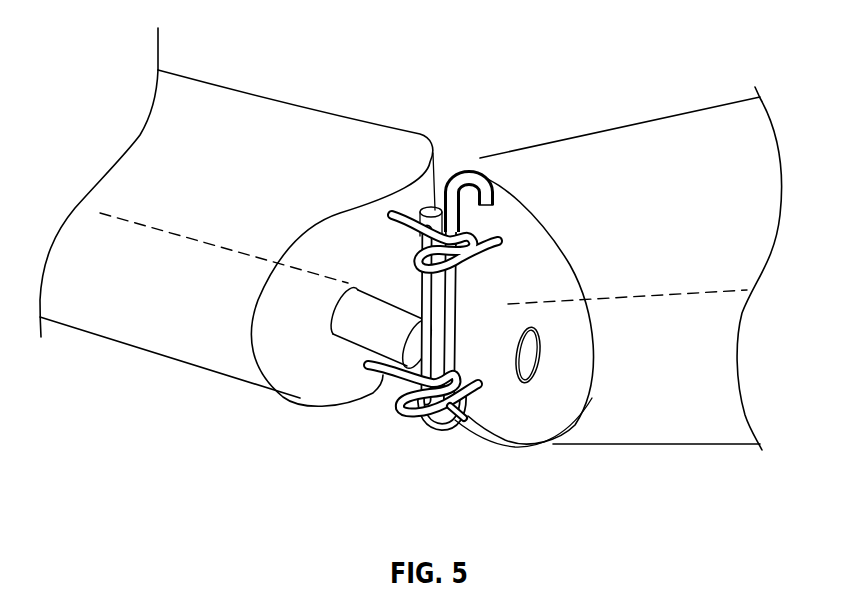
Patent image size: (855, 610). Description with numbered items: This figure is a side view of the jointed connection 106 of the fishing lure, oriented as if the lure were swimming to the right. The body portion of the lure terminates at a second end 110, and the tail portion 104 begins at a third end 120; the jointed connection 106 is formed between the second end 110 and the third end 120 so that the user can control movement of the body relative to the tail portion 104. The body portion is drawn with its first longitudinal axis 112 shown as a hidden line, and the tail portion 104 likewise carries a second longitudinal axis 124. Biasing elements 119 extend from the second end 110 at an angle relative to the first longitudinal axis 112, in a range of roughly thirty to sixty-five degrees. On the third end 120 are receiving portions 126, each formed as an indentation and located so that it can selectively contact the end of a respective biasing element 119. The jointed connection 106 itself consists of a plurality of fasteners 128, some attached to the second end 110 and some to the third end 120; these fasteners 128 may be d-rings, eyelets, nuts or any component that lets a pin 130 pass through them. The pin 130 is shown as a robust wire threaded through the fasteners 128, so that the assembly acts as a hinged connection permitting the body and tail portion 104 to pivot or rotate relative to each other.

The tail portion 104 is at (668, 430).
The jointed connection 106 is at (370, 434).
The second end 110 is at (480, 163).
The first longitudinal axis 112 is at (147, 224).
The biasing elements 119 is at (352, 331).
The third end 120 is at (500, 220).
The second longitudinal axis 124 is at (696, 292).
The receiving portion 126 is at (530, 360).
The fasteners 128 is at (403, 228).
The pin 130 is at (467, 165).